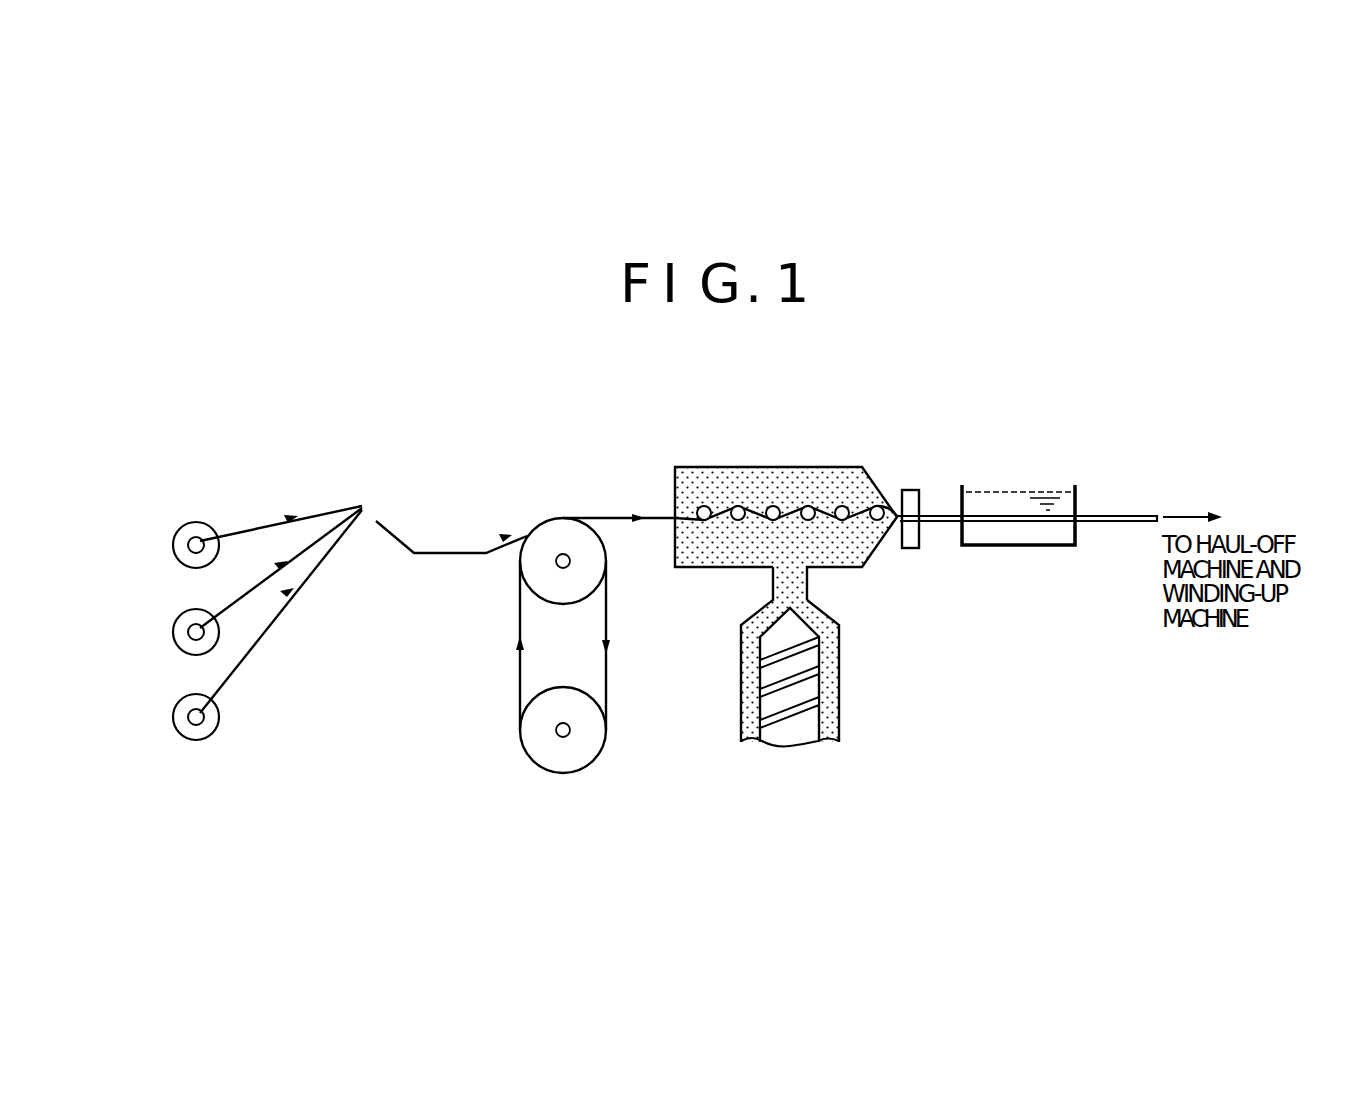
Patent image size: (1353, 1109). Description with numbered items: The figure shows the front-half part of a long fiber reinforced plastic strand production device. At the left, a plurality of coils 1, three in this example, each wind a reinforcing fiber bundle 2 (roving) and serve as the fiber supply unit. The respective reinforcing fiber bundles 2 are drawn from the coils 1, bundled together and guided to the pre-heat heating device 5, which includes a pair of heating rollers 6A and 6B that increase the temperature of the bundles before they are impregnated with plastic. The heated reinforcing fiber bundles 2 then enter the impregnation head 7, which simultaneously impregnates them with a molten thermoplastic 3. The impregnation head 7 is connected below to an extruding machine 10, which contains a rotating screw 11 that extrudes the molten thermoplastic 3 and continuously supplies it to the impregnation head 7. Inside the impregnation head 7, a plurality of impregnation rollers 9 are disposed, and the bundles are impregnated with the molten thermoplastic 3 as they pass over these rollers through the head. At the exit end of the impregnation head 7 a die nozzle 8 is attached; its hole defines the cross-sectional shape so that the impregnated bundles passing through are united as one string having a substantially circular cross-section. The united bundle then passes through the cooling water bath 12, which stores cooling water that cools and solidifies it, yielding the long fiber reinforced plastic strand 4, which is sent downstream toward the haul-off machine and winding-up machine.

The coil 1 is at (172, 539).
The reinforcing fiber bundle 2 is at (238, 522).
The molten thermoplastic 3 is at (793, 485).
The long fiber reinforced plastic strand 4 is at (943, 513).
The pre-heat heating device 5 is at (500, 645).
The heating roller 6A is at (530, 562).
The heating roller 6B is at (532, 732).
The impregnation head 7 is at (801, 561).
The die nozzle 8 is at (910, 498).
The impregnation roller 9 is at (704, 505).
The extruding machine 10 is at (840, 643).
The screw 11 is at (813, 683).
The cooling water bath 12 is at (990, 550).